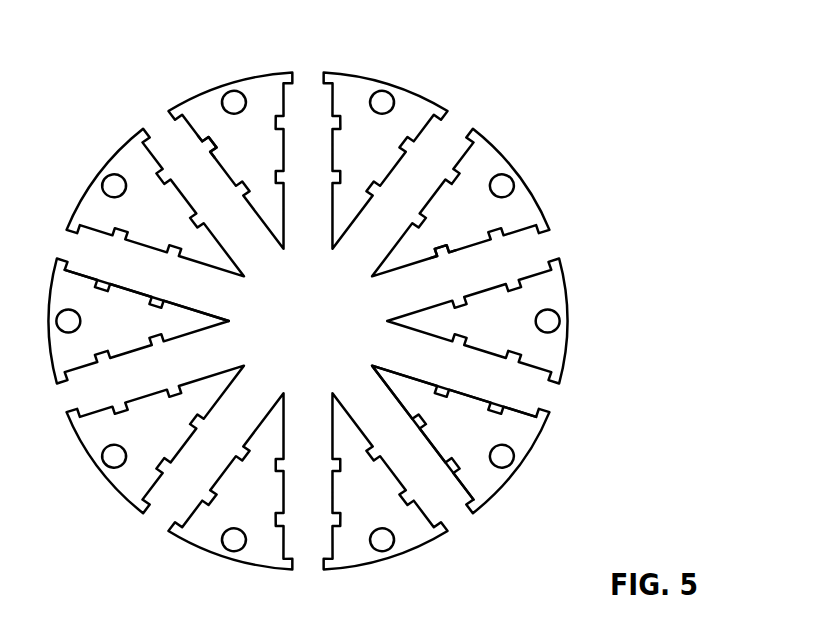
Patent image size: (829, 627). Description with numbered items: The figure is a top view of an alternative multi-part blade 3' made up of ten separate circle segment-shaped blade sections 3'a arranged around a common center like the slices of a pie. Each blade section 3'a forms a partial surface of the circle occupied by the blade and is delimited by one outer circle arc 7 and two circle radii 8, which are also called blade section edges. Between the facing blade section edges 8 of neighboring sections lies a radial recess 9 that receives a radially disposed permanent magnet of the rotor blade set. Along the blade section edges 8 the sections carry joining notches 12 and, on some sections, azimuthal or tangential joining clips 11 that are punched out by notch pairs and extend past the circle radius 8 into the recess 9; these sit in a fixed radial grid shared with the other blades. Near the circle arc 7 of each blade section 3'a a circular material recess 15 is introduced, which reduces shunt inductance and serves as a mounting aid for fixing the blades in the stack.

The multi-part blade 3' is at (326, 304).
The circle segment-shaped blade section 3'a is at (213, 142).
The circle arc 7 is at (518, 464).
The circle radius 8 is at (470, 387).
The radial recess 9 is at (108, 255).
The clip 11 is at (438, 255).
The notch 12 is at (207, 146).
The circular material recess 15 is at (387, 96).